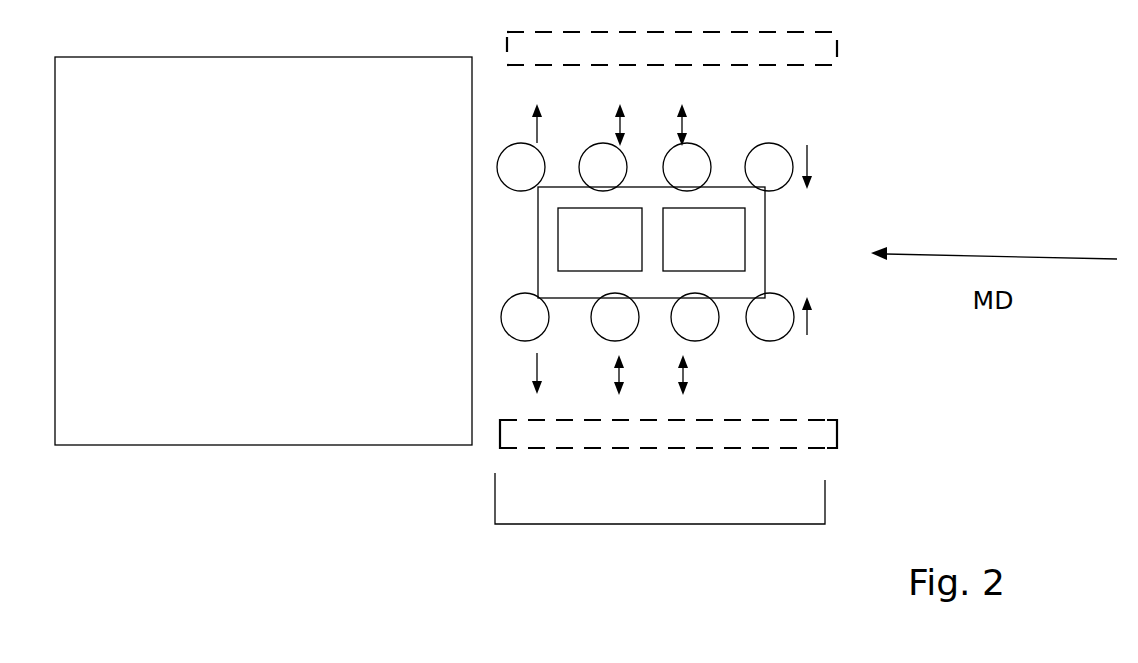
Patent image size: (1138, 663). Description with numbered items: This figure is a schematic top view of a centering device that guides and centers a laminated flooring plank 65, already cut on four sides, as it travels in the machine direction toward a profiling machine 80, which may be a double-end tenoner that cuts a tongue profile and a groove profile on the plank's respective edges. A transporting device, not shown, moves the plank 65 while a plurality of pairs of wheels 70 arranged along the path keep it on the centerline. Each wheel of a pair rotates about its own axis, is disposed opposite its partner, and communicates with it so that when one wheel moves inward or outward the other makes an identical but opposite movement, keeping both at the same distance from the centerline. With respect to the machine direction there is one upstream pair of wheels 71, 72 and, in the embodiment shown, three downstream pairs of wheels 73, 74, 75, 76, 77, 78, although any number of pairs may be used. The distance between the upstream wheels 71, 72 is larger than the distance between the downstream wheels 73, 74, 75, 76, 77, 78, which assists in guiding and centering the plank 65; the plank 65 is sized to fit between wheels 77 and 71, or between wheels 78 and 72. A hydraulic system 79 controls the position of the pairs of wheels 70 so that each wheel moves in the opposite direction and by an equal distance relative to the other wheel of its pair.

The laminated flooring plank 65 is at (710, 208).
The plurality of pairs of wheels 70 is at (663, 524).
The upstream wheel 71 is at (770, 341).
The upstream wheel 72 is at (769, 191).
The downstream wheel 73 is at (708, 341).
The downstream wheel 74 is at (703, 187).
The downstream wheel 75 is at (604, 341).
The downstream wheel 76 is at (606, 152).
The downstream wheel 77 is at (521, 341).
The downstream wheel 78 is at (521, 152).
The hydraulic system 79 is at (775, 40).
The profiling machine 80 is at (235, 437).